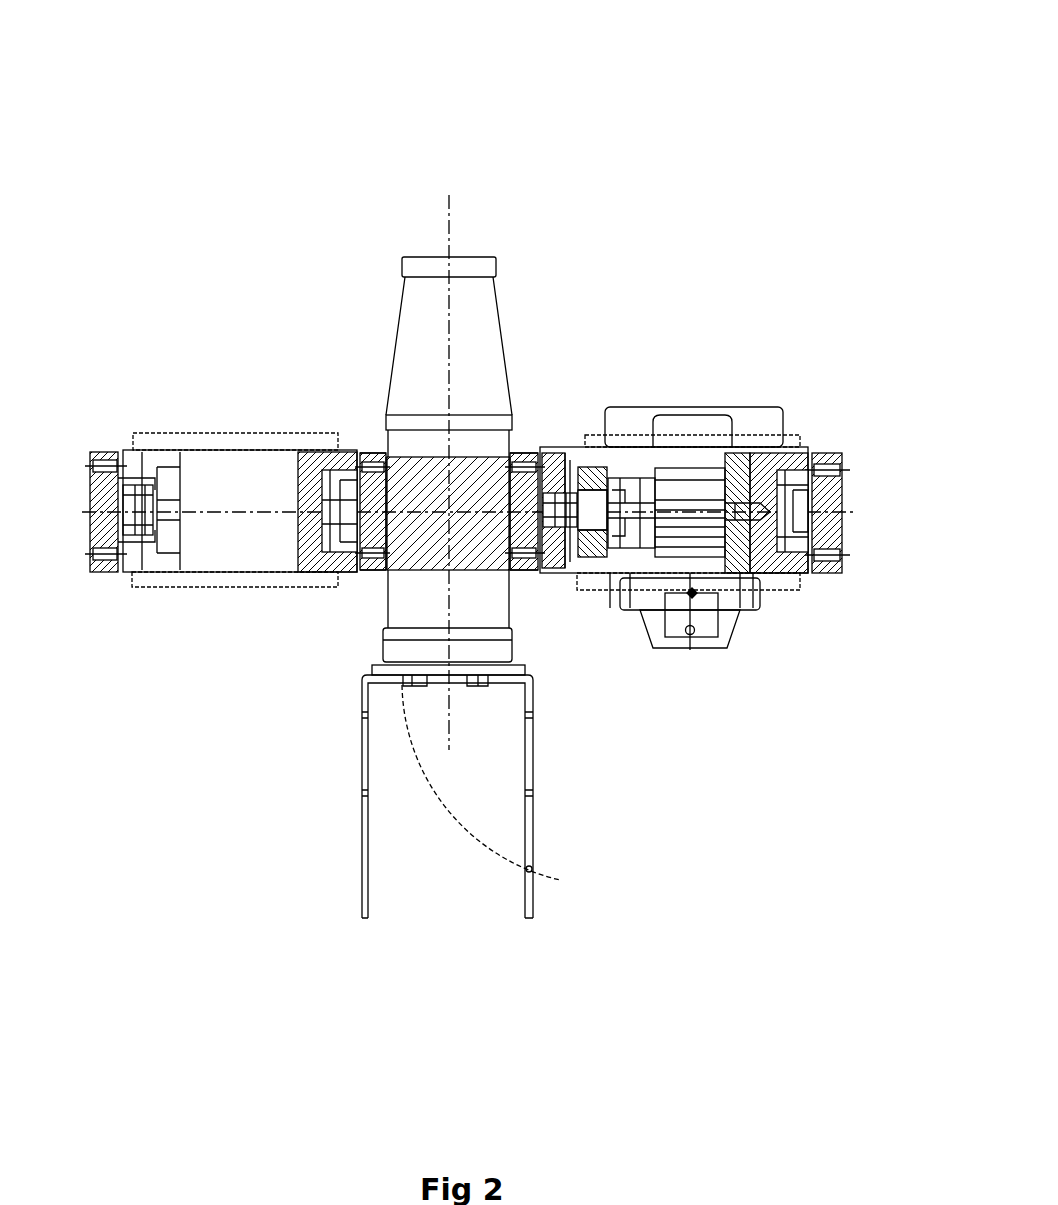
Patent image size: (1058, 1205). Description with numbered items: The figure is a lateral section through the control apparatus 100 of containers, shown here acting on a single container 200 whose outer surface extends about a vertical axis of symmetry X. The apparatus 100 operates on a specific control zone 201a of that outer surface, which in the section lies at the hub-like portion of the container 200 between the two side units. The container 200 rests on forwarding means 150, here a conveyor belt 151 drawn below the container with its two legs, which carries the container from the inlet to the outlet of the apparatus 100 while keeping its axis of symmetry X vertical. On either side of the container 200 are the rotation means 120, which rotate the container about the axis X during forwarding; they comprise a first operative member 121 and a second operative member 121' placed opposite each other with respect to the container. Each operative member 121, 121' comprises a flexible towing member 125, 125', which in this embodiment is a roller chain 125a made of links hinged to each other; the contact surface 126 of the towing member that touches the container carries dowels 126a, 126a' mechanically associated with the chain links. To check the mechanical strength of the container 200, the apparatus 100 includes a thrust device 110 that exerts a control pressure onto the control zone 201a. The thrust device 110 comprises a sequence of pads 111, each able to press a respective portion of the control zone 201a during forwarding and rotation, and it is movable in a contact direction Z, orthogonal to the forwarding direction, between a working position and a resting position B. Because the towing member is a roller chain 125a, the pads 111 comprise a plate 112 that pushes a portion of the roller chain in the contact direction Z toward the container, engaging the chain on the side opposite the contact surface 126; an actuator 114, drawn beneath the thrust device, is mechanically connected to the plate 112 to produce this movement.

The control apparatus 100 is at (343, 128).
The thrust device 110 is at (706, 474).
The pads 111 is at (703, 439).
The plate 112 is at (577, 448).
The actuator 114 is at (700, 545).
The rotation means 120 is at (478, 466).
The first operative member 121 is at (574, 447).
The second operative member 121' is at (341, 454).
The flexible towing member 125 is at (617, 600).
The flexible towing member 125' is at (208, 593).
The roller chain 125a is at (138, 485).
The contact surface 126 is at (400, 555).
The dowels 126a is at (566, 564).
The dowels 126a' is at (346, 556).
The forwarding means 150 is at (563, 796).
The conveyor belt 151 is at (530, 869).
The container 200 is at (448, 566).
The control zone 201a is at (449, 357).
The resting position B is at (522, 440).
The vertical axis of symmetry X is at (452, 245).
The contact direction Z is at (282, 510).